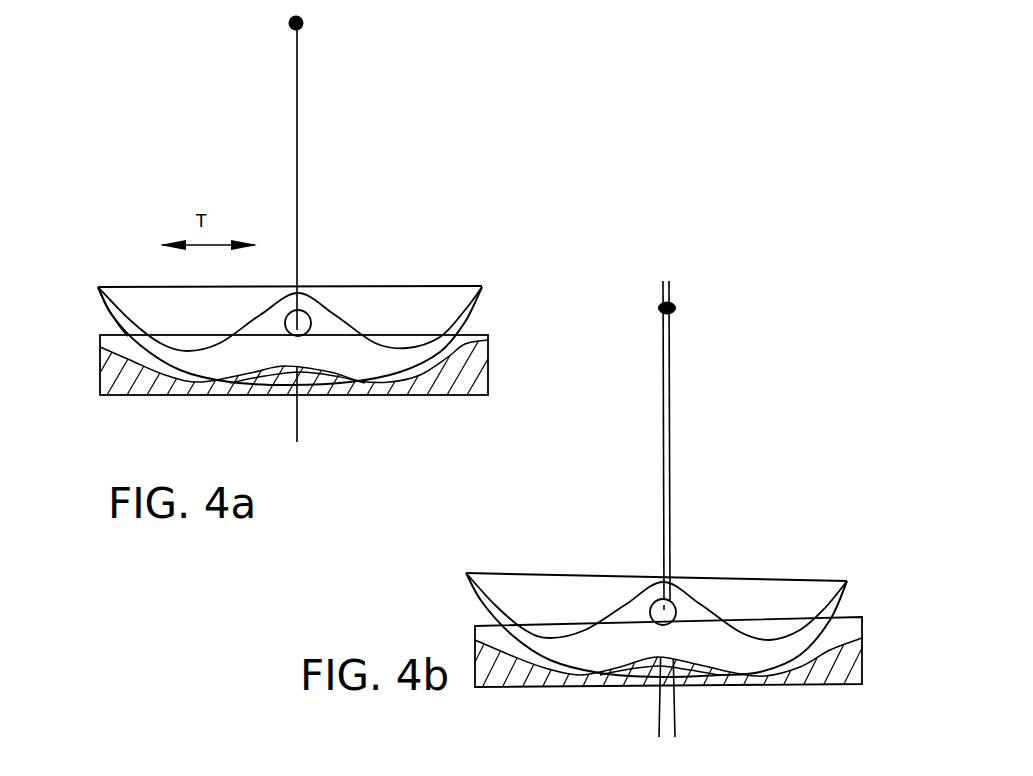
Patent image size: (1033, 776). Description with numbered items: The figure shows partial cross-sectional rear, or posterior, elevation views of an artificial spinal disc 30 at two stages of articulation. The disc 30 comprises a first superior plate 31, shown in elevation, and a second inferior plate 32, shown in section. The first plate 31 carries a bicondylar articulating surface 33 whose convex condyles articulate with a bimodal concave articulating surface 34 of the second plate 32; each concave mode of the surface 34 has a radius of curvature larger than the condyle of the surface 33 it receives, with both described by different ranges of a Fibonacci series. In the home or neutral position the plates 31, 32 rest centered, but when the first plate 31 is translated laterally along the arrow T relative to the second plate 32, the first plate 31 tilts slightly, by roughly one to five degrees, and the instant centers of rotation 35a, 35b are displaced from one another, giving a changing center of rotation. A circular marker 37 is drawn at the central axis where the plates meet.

In FIG. 4a, the artificial spinal disc 30 is at (468, 258).
In FIG. 4a, the first superior plate 31 is at (478, 305).
In FIG. 4b, the first superior plate 31 is at (792, 578).
In FIG. 4a, the second inferior plate 32 is at (437, 396).
In FIG. 4b, the second inferior plate 32 is at (795, 688).
In FIG. 4a, the articulating surface 33 is at (98, 314).
In FIG. 4a, the bimodal concave articulating surface 34 is at (458, 352).
In FIG. 4b, the instant center of rotation 35a is at (658, 307).
In FIG. 4b, the instant center of rotation 35b is at (676, 307).
In FIG. 4a, the aperture stop 37 is at (307, 305).
In FIG. 4b, the aperture stop 37 is at (654, 600).